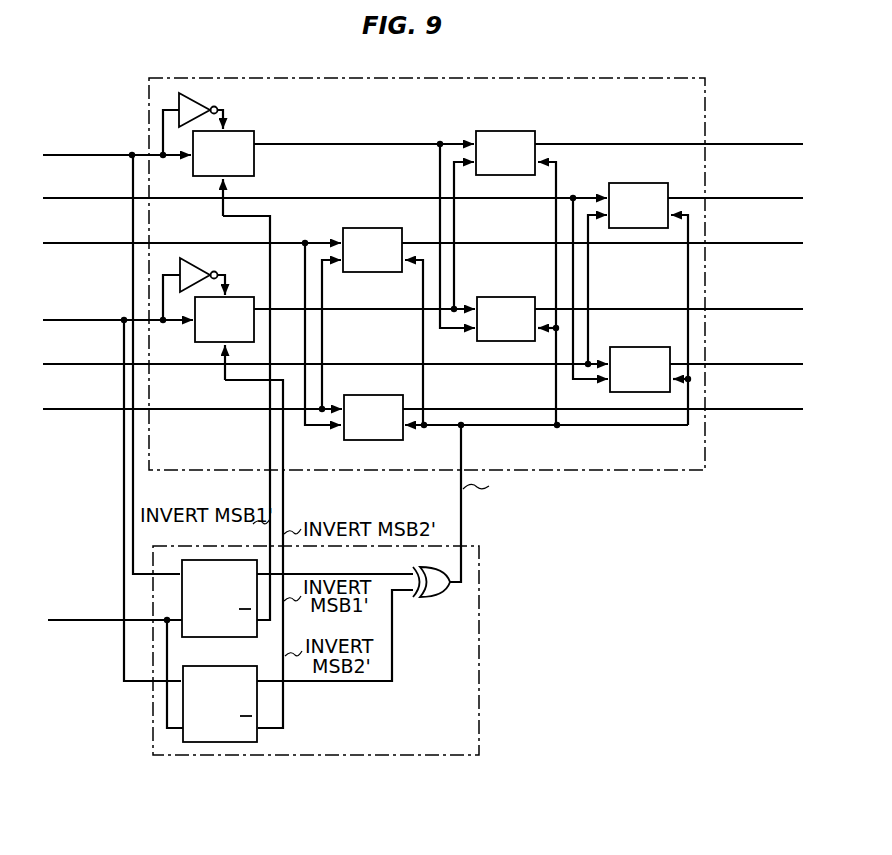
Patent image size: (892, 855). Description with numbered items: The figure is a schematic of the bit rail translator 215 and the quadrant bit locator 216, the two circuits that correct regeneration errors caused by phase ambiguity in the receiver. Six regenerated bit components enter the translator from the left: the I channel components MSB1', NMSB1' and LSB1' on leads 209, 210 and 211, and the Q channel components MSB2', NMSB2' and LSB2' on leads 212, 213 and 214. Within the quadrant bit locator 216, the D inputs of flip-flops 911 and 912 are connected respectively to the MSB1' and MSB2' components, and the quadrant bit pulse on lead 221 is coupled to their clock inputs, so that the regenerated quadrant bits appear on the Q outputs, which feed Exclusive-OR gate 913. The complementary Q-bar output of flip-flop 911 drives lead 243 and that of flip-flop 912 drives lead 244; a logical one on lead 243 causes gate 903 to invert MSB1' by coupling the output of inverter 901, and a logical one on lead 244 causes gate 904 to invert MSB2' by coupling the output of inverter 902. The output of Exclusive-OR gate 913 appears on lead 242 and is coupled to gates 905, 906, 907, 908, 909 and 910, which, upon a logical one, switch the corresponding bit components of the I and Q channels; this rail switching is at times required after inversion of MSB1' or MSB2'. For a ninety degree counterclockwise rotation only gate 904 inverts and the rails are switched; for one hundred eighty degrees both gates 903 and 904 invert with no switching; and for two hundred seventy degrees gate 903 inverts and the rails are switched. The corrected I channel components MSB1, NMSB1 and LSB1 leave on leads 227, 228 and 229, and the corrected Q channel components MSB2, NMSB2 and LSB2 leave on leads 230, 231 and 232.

The lead 209 is at (81, 158).
The lead 210 is at (81, 202).
The lead 211 is at (81, 248).
The lead 212 is at (81, 323).
The lead 213 is at (81, 367).
The lead 214 is at (81, 412).
The bit rail translator 215 is at (702, 471).
The quadrant bit locator 216 is at (481, 668).
The lead 221 is at (78, 632).
The lead 227 is at (746, 147).
The lead 228 is at (758, 201).
The lead 229 is at (758, 246).
The lead 230 is at (760, 312).
The lead 231 is at (762, 367).
The lead 232 is at (762, 412).
The lead 242 is at (463, 514).
The lead 243 is at (272, 490).
The lead 244 is at (284, 512).
The inverter 901 is at (197, 103).
The inverter 902 is at (199, 270).
The gate 903 is at (240, 130).
The gate 904 is at (202, 342).
The gate 905 is at (382, 272).
The gate 906 is at (381, 440).
The gate 907 is at (512, 131).
The gate 908 is at (496, 297).
The gate 909 is at (632, 183).
The gate 910 is at (632, 347).
The flip-flop 911 is at (211, 638).
The flip-flop 912 is at (257, 742).
The Exclusive-OR gate 913 is at (441, 596).